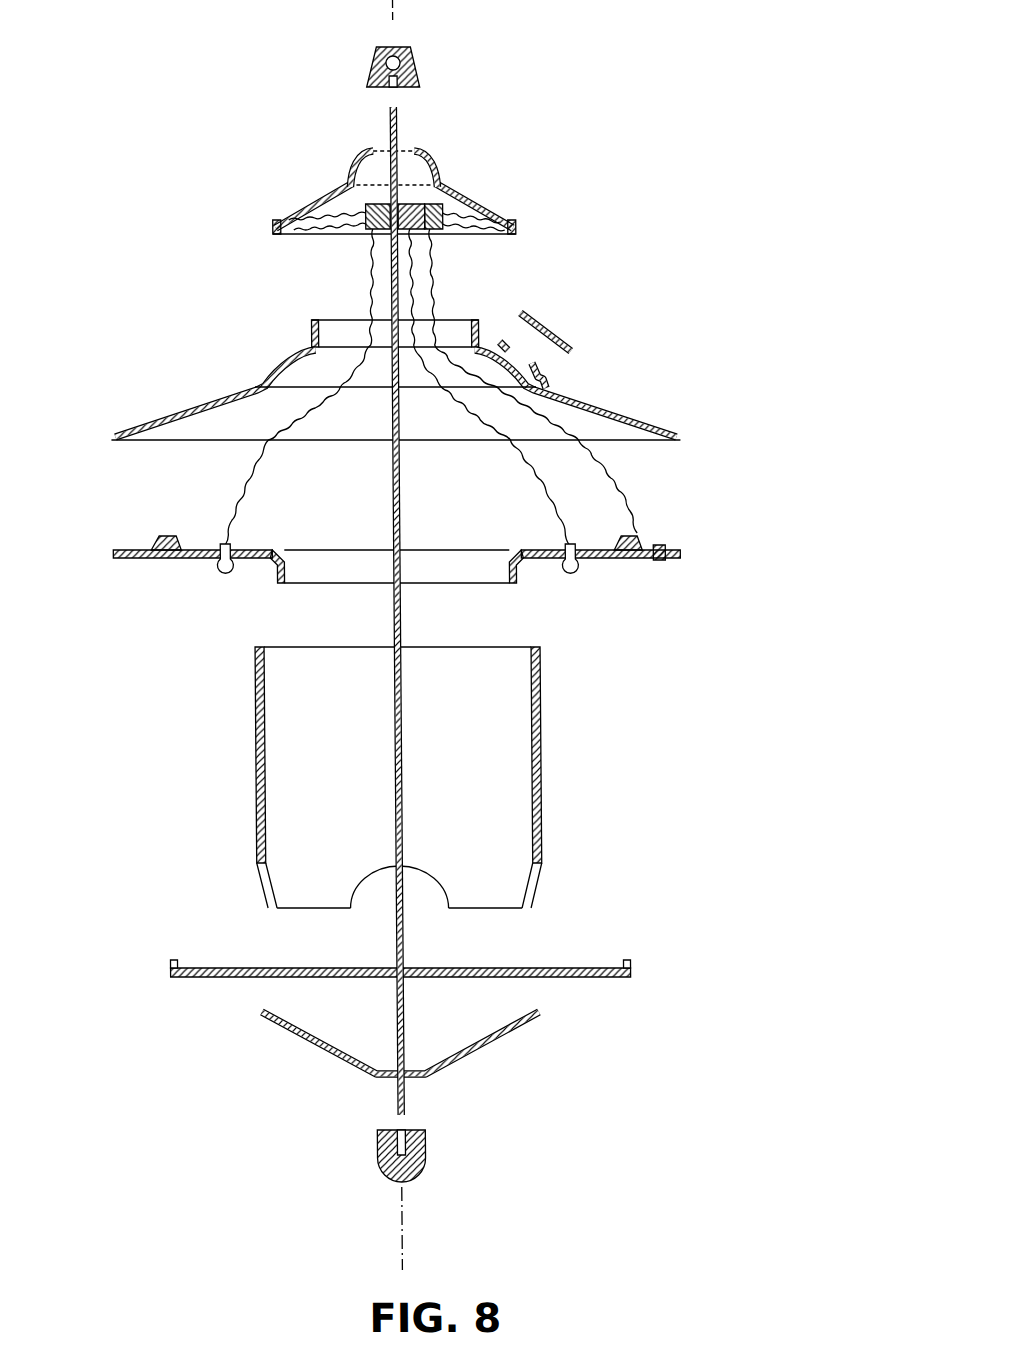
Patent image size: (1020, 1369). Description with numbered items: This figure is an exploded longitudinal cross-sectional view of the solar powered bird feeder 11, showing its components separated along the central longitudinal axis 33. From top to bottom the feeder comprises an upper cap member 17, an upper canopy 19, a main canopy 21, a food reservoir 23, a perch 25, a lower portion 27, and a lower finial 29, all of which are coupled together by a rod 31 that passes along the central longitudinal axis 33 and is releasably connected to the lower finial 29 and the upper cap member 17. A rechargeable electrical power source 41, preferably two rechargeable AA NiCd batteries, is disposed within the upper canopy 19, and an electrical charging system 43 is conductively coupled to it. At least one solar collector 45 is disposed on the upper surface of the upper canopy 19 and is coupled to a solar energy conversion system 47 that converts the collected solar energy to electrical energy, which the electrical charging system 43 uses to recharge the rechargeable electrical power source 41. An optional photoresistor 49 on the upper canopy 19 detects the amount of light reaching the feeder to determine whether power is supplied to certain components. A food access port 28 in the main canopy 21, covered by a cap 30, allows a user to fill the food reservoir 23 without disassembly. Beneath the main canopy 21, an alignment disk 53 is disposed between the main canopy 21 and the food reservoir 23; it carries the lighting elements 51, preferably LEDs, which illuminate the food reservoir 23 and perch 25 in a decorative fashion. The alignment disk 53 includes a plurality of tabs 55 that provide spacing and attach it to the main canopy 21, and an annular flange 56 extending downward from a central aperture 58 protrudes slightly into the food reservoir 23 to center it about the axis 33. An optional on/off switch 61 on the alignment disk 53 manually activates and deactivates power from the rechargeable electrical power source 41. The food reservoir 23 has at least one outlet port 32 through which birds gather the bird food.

The bird feeder 11 is at (743, 690).
The upper cap member 17 is at (424, 63).
The upper canopy 19 is at (263, 233).
The main canopy 21 is at (669, 432).
The food reservoir 23 is at (545, 745).
The perch 25 is at (605, 982).
The lower portion 27 is at (492, 1043).
The food access port 28 is at (536, 357).
The lower finial 29 is at (421, 1155).
The cap 30 is at (548, 318).
The rod 31 is at (402, 950).
The outlet port 32 is at (368, 868).
The central longitudinal axis 33 is at (400, 1222).
The rechargeable electrical power source 41 is at (415, 200).
The electrical charging system 43 is at (360, 232).
The solar collector 45 is at (320, 185).
The solar energy conversion system 47 is at (446, 232).
The photoresistor 49 is at (274, 216).
The lighting element 51 is at (219, 578).
The alignment disk 53 is at (674, 546).
The tab 55 is at (160, 540).
The annular flange 56 is at (262, 575).
The central aperture 58 is at (511, 575).
The on/off switch 61 is at (661, 562).